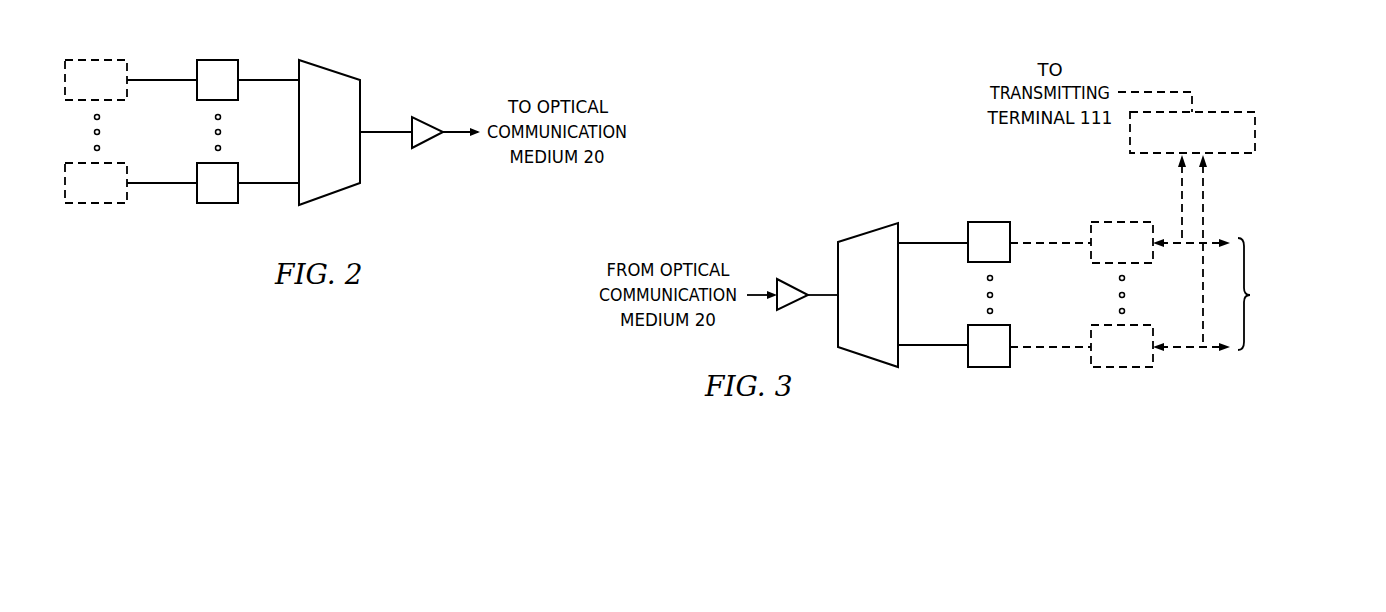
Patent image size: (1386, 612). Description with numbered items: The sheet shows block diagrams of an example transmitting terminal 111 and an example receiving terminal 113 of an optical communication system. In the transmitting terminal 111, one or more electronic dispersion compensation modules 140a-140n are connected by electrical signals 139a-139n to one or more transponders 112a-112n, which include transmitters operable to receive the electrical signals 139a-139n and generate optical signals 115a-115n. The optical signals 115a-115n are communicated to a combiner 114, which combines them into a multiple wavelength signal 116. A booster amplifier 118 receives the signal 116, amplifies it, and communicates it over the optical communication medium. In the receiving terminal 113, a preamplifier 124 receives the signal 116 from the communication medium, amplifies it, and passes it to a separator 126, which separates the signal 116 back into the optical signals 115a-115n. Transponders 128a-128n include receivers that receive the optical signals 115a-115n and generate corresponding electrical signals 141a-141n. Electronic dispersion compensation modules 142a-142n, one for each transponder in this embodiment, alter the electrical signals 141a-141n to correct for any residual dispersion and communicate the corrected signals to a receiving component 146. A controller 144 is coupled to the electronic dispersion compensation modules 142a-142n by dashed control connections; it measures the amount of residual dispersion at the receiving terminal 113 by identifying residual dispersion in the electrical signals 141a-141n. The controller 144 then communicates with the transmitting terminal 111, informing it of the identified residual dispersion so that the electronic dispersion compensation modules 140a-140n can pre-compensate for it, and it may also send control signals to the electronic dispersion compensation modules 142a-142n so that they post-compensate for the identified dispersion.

In FIG. 2, the transmitting terminal 111 is at (422, 186).
In FIG. 2, the transponder 112a is at (215, 60).
In FIG. 2, the transponder 112n is at (213, 204).
In FIG. 3, the receiving terminal 113 is at (813, 162).
In FIG. 2, the combiner 114 is at (331, 70).
In FIG. 2, the optical signal 115a is at (272, 80).
In FIG. 3, the optical signal 115a is at (930, 243).
In FIG. 2, the optical signal 115n is at (262, 183).
In FIG. 3, the optical signal 115n is at (920, 345).
In FIG. 2, the multiple wavelength signal 116 is at (385, 132).
In FIG. 3, the multiple wavelength signal 116 is at (820, 295).
In FIG. 2, the booster amplifier 118 is at (432, 124).
In FIG. 3, the preamplifier 124 is at (791, 310).
In FIG. 3, the separator 126 is at (862, 235).
In FIG. 3, the transponder 128a is at (990, 222).
In FIG. 3, the transponder 128n is at (992, 367).
In FIG. 2, the electrical signal 139a is at (160, 80).
In FIG. 2, the electrical signal 139n is at (162, 183).
In FIG. 2, the electronic dispersion compensation module 140a is at (88, 58).
In FIG. 2, the electronic dispersion compensation module 140n is at (82, 204).
In FIG. 3, the electrical signal 141a is at (1050, 243).
In FIG. 3, the electrical signal 141n is at (1052, 347).
In FIG. 3, the electronic dispersion compensation module 142a is at (1112, 222).
In FIG. 3, the electronic dispersion compensation module 142n is at (1112, 367).
In FIG. 3, the controller 144 is at (1235, 155).
In FIG. 3, the receiving component 146 is at (1297, 294).